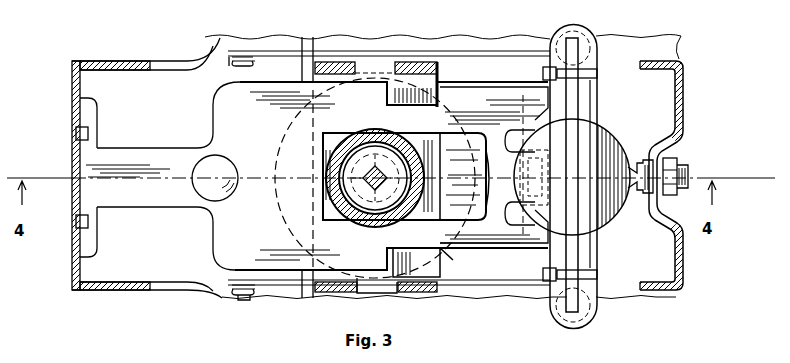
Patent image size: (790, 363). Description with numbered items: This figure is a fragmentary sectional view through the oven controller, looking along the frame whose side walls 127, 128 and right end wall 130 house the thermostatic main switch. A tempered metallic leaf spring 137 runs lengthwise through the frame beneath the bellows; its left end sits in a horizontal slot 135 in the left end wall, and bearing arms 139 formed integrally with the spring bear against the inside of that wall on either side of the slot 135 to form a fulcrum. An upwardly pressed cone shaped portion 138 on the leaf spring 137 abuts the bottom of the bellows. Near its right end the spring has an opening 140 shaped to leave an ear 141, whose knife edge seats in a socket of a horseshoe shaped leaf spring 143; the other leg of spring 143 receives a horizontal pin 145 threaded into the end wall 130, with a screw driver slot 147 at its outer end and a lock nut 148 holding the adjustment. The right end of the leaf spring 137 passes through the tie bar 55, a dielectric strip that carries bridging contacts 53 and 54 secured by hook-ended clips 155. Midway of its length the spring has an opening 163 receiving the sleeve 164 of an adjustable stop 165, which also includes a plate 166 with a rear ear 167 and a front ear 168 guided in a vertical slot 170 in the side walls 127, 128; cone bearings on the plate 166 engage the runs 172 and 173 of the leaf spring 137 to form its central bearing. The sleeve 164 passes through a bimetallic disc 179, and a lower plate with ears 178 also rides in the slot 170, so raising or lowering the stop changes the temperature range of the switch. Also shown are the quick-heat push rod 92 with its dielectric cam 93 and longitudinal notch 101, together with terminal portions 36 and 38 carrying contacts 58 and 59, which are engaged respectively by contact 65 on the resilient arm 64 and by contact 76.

The upwardly extending portion 36 is at (250, 63).
The upwardly extending portion 38 is at (247, 298).
The bridging contact 53 is at (584, 38).
The bridging contact 54 is at (590, 255).
The tie bar 55 is at (574, 102).
The contact 58 is at (228, 60).
The contact 59 is at (240, 300).
The resilient arm 64 is at (278, 50).
The contact 65 is at (234, 53).
The contact 76 is at (235, 283).
The push rod 92 is at (372, 210).
The cam 93 is at (318, 169).
The notch 101 is at (374, 137).
The side wall 127 is at (153, 64).
The side wall 128 is at (128, 291).
The right end wall 130 is at (672, 110).
The slot 135 is at (73, 164).
The leaf spring 137 is at (142, 200).
The cone shaped portion 138 is at (215, 160).
The bearing arms 139 is at (100, 117).
The opening 140 is at (513, 137).
The ear 141 is at (528, 114).
The horseshoe shaped leaf spring 143 is at (602, 143).
The pin 145 is at (628, 173).
The screw driver slot 147 is at (688, 174).
The lock nut 148 is at (668, 163).
The clips 155 is at (597, 74).
The opening 163 is at (516, 144).
The sleeve 164 is at (343, 152).
The adjustable stop 165 is at (438, 160).
The plate 166 is at (438, 70).
The ear 167 is at (372, 62).
The ear 168 is at (345, 295).
The slot 170 is at (415, 295).
The run 172 is at (370, 136).
The run 173 is at (398, 257).
The ears 178 is at (312, 60).
The bimetallic disc 179 is at (520, 210).